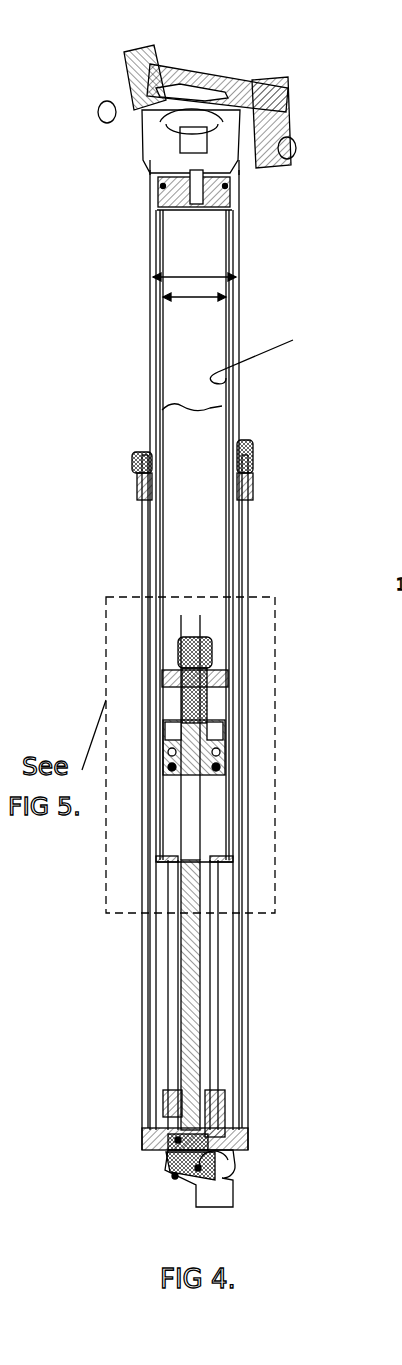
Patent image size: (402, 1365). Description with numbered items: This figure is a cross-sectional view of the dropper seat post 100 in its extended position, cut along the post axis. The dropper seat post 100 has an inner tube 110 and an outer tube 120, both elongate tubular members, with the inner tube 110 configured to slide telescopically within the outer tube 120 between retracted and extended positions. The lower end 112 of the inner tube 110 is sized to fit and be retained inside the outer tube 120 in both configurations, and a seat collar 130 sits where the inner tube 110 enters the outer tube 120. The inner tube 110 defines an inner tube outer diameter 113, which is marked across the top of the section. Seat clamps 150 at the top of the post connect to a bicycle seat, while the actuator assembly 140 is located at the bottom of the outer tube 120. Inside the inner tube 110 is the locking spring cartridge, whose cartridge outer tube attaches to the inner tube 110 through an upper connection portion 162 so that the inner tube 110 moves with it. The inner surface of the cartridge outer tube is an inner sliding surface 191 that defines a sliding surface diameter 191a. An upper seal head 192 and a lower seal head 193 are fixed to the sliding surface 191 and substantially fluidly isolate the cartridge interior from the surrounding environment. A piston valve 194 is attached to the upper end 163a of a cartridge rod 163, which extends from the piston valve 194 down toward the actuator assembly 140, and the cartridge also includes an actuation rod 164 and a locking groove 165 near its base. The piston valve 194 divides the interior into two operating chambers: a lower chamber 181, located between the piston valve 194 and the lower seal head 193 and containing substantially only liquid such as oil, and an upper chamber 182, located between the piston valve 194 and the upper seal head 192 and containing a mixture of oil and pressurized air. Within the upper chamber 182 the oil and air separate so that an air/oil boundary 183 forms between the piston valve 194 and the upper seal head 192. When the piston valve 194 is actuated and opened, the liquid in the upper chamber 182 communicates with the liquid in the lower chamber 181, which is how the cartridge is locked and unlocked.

The dropper seat post 100 is at (201, 624).
The inner tube 110 is at (149, 252).
The lower end 112 is at (168, 860).
The inner tube outer diameter 113 is at (210, 278).
The outer tube 120 is at (247, 520).
The seat collar 130 is at (254, 460).
The actuator assembly 140 is at (235, 1200).
The seat clamps 150 is at (118, 68).
The upper connection portion 162 is at (178, 170).
The cartridge rod 163 is at (213, 957).
The upper end of cartridge rod 163a is at (230, 700).
The actuation rod 164 is at (203, 1045).
The locking groove 165 is at (205, 1100).
The lower chamber 181 is at (172, 700).
The upper chamber 182 is at (188, 498).
The air/oil boundary 183 is at (180, 405).
The inner sliding surface 191 is at (265, 358).
The sliding surface diameter 191a is at (192, 298).
The upper seal head 192 is at (227, 207).
The lower seal head 193 is at (233, 730).
The piston valve 194 is at (228, 660).